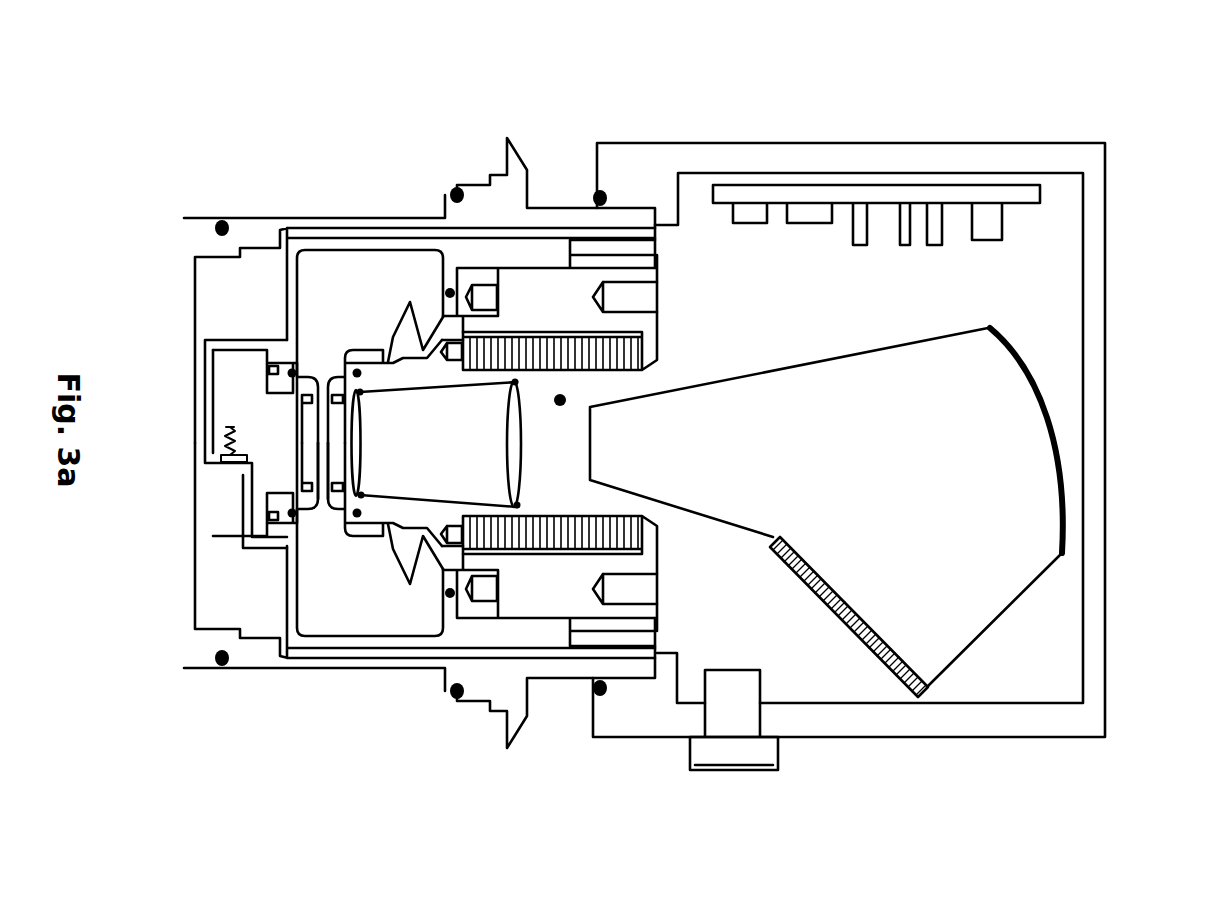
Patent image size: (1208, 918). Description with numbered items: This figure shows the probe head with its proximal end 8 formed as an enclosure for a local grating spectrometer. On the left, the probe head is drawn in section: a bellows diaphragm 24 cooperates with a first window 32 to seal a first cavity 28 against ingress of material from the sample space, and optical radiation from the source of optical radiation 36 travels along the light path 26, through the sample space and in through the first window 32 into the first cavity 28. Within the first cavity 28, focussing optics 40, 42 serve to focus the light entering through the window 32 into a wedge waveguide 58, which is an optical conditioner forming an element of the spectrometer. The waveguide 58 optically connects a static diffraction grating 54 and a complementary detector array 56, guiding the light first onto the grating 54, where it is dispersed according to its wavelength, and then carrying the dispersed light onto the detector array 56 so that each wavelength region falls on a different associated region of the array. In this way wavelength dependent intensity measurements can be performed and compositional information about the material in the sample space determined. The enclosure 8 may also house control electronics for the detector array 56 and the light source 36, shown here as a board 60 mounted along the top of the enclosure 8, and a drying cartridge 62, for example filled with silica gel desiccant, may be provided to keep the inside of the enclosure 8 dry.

The proximal end 8 is at (1099, 546).
The bellows diaphragm 24 is at (410, 300).
The light path 26 is at (335, 552).
The first cavity 28 is at (565, 400).
The first window 32 is at (340, 437).
The source of optical radiation 36 is at (216, 441).
The focussing optics 40 is at (362, 418).
The focussing optics 42 is at (518, 465).
The static diffraction grating 54 is at (1052, 385).
The detector array 56 is at (837, 628).
The wedge waveguide 58 is at (849, 456).
The circuit board 60 is at (953, 192).
The drying cartridge 62 is at (777, 750).